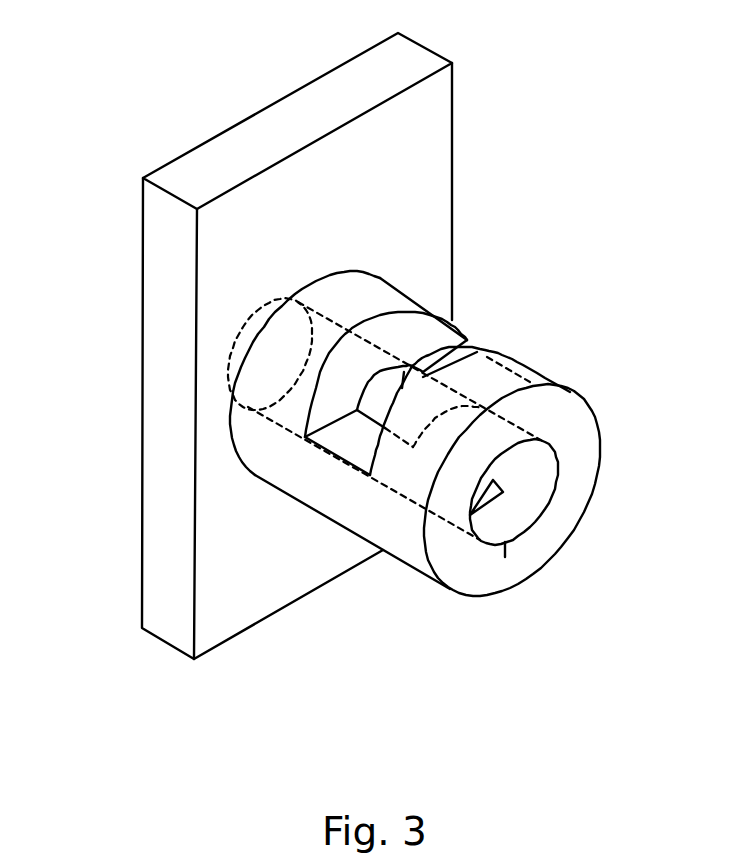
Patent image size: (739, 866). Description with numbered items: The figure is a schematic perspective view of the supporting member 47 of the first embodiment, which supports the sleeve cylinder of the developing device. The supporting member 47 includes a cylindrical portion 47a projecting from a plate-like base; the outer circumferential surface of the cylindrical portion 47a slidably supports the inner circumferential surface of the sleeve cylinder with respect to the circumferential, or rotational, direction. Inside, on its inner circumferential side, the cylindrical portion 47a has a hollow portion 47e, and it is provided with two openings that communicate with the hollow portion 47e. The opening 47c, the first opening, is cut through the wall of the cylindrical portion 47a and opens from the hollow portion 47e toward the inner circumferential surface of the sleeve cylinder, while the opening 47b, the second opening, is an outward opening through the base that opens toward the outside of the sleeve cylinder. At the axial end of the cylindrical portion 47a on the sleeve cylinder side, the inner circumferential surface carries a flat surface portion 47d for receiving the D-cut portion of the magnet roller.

The supporting member 47 is at (473, 121).
The cylindrical portion 47a is at (293, 478).
The opening 47b is at (228, 360).
The opening 47c is at (460, 350).
The flat surface portion 47d is at (497, 483).
The hollow portion 47e is at (300, 408).